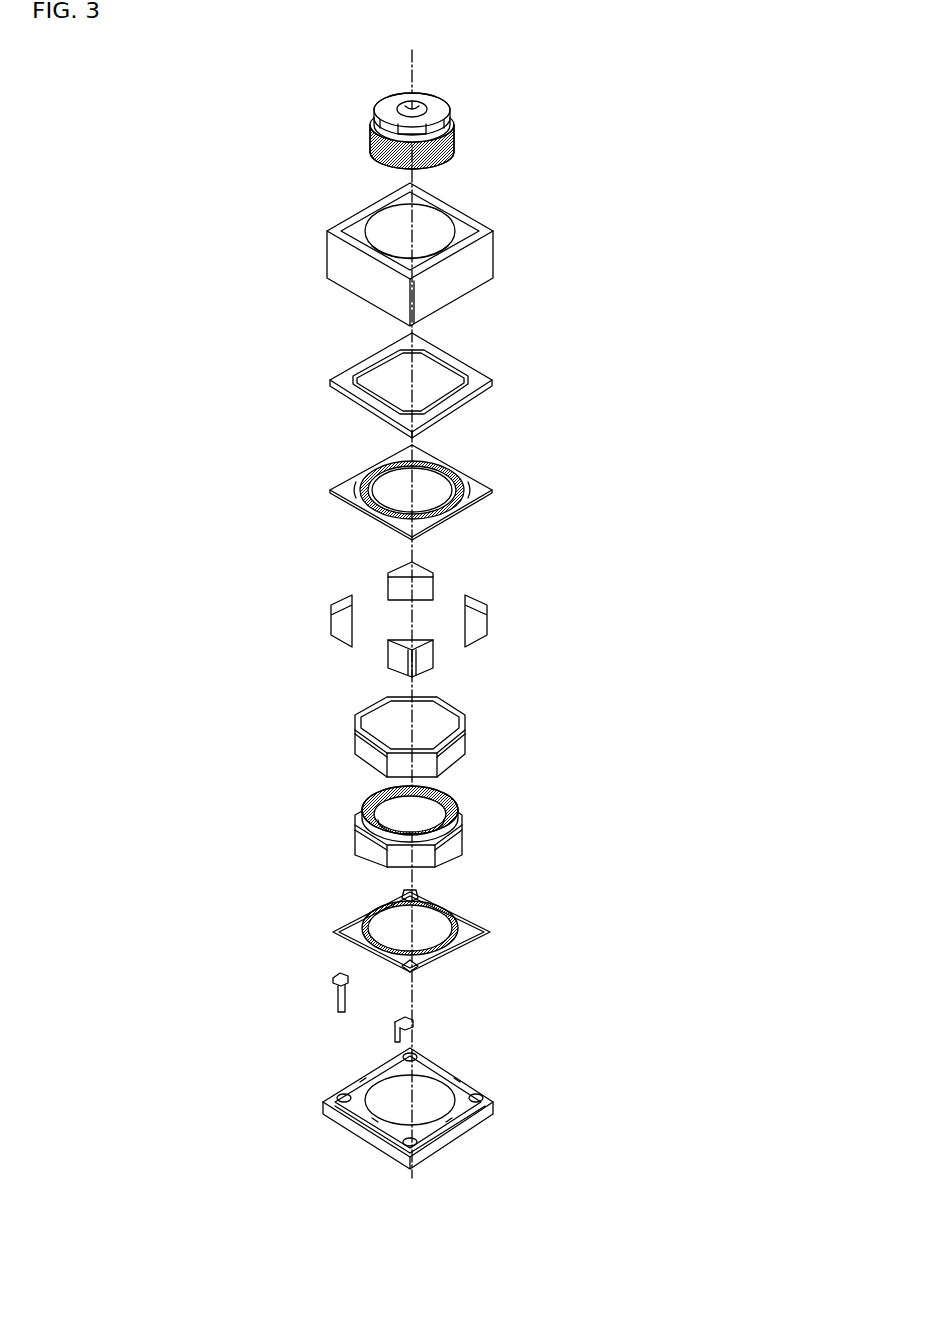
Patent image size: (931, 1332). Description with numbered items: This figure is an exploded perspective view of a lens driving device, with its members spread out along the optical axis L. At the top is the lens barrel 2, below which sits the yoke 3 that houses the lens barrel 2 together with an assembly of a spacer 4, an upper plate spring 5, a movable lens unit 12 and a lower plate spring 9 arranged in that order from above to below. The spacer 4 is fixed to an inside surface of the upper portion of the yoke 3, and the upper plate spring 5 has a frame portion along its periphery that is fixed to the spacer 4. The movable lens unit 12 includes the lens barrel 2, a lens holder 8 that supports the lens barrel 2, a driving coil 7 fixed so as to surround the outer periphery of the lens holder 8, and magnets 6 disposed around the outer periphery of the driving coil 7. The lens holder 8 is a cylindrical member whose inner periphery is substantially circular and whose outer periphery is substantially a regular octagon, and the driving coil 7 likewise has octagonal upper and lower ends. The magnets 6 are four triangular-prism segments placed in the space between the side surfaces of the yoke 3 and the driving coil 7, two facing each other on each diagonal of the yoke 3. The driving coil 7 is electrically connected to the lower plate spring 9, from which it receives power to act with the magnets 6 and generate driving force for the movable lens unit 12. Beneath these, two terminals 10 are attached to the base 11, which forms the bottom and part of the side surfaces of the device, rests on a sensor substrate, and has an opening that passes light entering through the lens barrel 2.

The optical axis L is at (417, 77).
The lens barrel 2 is at (455, 128).
The yoke 3 is at (493, 250).
The spacer 4 is at (492, 383).
The upper plate spring 5 is at (492, 492).
The magnets 6 is at (487, 615).
The driving coil 7 is at (465, 725).
The lens holder 8 is at (462, 833).
The lower plate spring 9 is at (492, 933).
The terminals 10 is at (413, 1020).
The base 11 is at (493, 1100).
The movable lens unit 12 is at (354, 785).